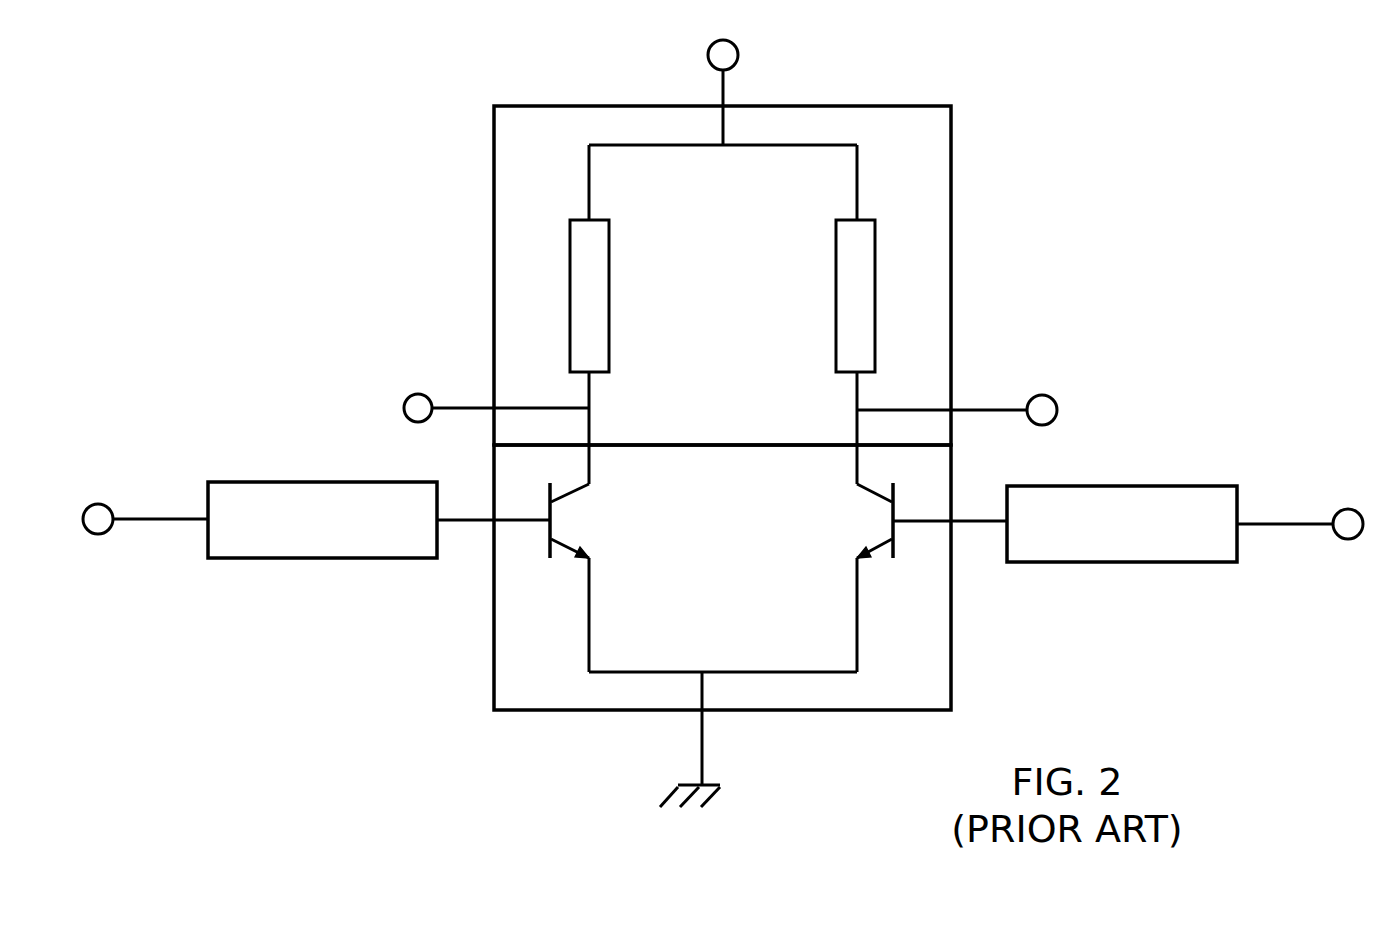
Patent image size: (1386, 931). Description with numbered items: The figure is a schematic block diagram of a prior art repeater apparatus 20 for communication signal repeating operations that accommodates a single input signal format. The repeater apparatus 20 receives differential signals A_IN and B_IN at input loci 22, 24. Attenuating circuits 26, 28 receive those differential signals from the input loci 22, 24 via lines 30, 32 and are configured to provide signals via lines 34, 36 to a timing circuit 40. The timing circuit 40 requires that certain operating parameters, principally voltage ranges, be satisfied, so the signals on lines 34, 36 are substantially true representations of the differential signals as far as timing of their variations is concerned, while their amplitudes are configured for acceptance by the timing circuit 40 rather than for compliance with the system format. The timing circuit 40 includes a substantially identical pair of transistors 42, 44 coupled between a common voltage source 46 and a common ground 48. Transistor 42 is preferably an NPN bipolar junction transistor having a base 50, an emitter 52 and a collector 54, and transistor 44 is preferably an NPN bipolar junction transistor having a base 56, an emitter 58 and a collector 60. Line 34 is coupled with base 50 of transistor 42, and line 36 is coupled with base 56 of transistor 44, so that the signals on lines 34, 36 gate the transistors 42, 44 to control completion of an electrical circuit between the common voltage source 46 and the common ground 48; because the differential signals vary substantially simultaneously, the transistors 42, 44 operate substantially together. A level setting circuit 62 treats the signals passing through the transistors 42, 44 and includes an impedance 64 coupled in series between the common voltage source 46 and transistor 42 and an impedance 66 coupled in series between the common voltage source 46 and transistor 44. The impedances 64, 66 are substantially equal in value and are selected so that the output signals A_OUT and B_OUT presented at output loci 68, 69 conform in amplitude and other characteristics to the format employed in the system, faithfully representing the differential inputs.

The repeater apparatus 20 is at (1162, 257).
The input locus 22 is at (98, 535).
The input locus 24 is at (1345, 540).
The attenuating circuit 26 is at (283, 558).
The attenuating circuit 28 is at (1085, 563).
The line 30 is at (145, 517).
The line 32 is at (1293, 522).
The line 34 is at (465, 517).
The line 36 is at (980, 521).
The timing circuit 40 is at (492, 668).
The transistor 42 is at (593, 522).
The transistor 44 is at (847, 522).
The common voltage source 46 is at (712, 48).
The common ground 48 is at (702, 767).
The base 50 is at (547, 535).
The emitter 52 is at (592, 556).
The collector of transistor A 54 is at (573, 492).
The base 56 is at (895, 537).
The emitter 58 is at (855, 553).
The collector 60 is at (868, 493).
The level setting circuit 62 is at (847, 106).
The impedance 64 is at (609, 285).
The impedance 66 is at (836, 281).
The output locus 68 is at (404, 405).
The output locus 69 is at (1058, 413).